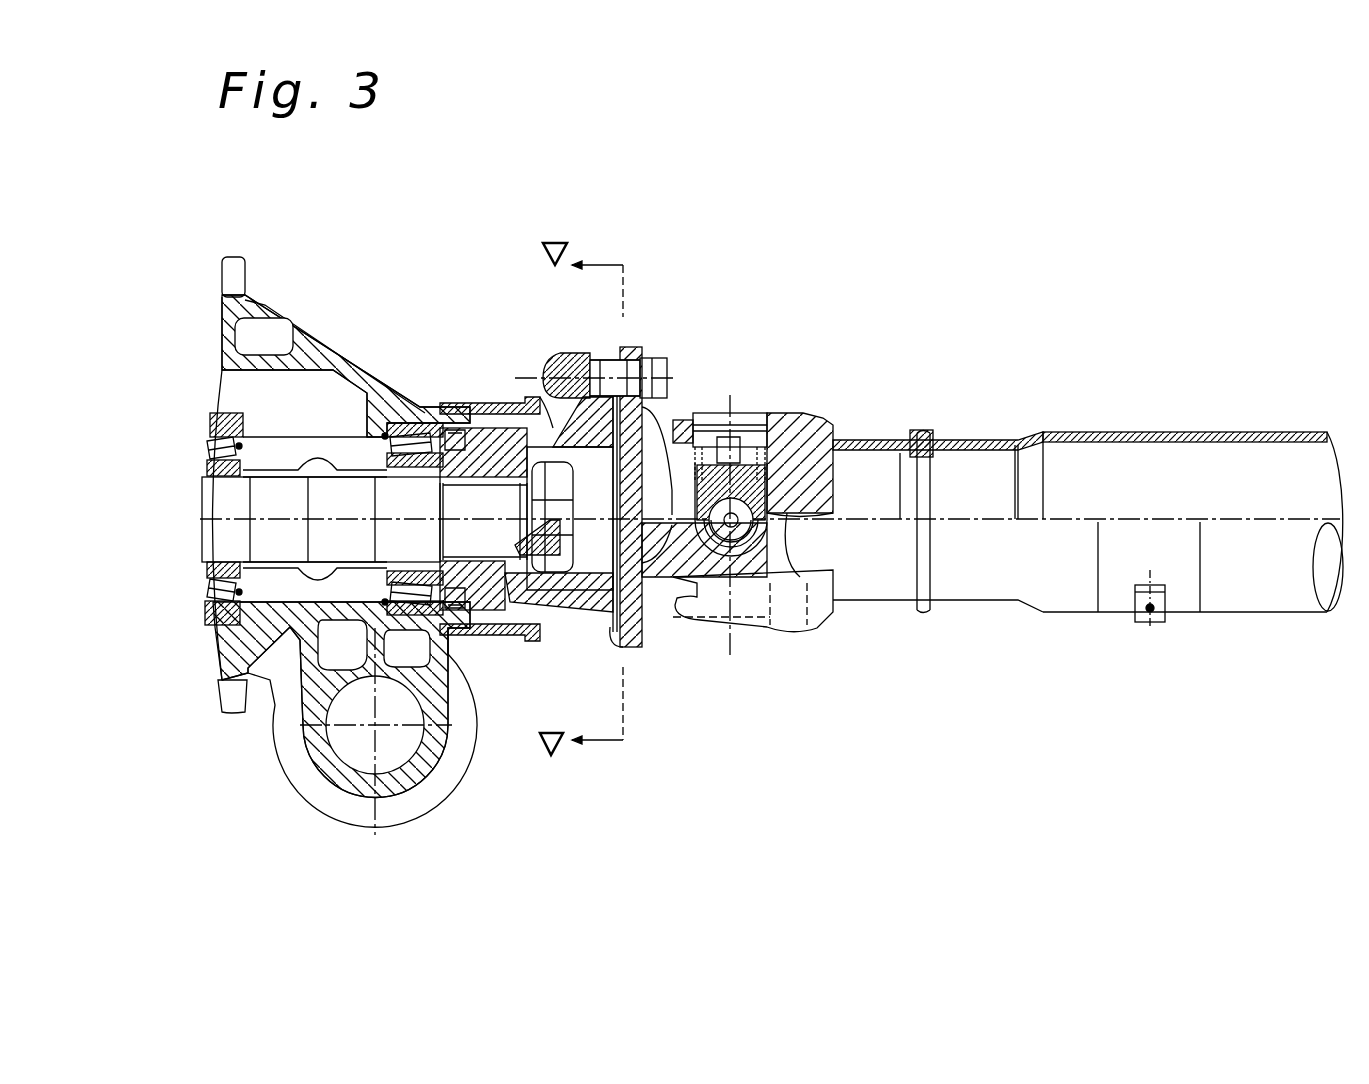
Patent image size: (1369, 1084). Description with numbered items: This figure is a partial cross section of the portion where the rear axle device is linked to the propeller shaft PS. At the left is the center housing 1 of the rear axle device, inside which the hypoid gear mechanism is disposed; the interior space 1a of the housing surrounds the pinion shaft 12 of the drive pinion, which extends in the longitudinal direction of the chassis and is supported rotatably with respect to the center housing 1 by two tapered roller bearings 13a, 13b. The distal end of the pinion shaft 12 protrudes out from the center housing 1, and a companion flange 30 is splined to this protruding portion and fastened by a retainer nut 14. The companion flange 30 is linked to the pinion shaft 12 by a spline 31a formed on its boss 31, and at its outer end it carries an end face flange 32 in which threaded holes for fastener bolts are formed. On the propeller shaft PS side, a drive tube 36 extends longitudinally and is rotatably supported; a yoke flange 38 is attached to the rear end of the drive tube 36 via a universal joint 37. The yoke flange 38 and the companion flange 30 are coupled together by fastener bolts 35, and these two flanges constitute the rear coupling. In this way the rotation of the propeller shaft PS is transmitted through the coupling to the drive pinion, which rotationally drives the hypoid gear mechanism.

The center housing 1 is at (310, 350).
The housing cavity 1a is at (308, 424).
The pinion shaft 12 is at (213, 540).
The tapered roller bearing 13a is at (412, 424).
The tapered roller bearing 13b is at (208, 440).
The retainer nut 14 is at (552, 468).
The companion flange 30 is at (563, 613).
The boss 31 is at (503, 578).
The spline 31a is at (495, 440).
The end face flange 32 is at (604, 627).
The fastener bolt 35 is at (655, 358).
The drive tube 36 is at (985, 440).
The universal joint 37 is at (742, 420).
The yoke flange 38 is at (640, 613).
The propeller shaft PS is at (1108, 430).